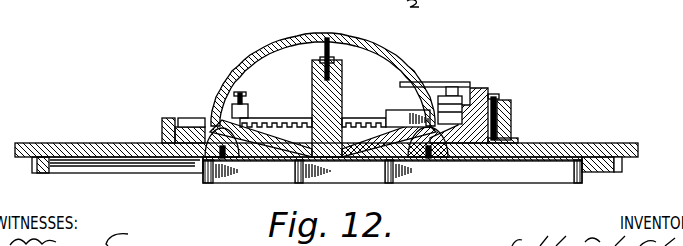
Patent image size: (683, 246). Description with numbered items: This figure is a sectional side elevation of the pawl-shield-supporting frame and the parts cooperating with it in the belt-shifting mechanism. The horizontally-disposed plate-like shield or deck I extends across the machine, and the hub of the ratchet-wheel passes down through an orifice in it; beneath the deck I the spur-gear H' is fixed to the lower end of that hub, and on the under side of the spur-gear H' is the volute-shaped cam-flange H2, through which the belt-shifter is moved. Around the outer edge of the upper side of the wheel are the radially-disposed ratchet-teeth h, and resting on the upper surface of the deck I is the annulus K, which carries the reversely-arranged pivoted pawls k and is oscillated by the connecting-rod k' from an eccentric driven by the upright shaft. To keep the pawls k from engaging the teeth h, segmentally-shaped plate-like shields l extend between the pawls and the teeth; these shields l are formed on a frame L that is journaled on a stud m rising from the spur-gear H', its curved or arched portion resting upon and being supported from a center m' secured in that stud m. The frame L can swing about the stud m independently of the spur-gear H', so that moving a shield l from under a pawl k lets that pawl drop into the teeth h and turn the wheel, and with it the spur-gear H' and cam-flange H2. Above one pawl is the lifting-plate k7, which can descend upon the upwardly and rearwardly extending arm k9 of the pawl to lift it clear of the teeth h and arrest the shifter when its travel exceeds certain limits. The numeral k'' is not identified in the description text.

The shield or deck I is at (65, 143).
The spur-gear H' is at (117, 179).
The volute-shaped cam-flange H2 is at (406, 178).
The annulus K is at (162, 121).
The ratchet-teeth h is at (188, 123).
The segmentally-shaped shields l is at (420, 108).
The frame L is at (368, 39).
The stud m is at (342, 108).
The center m' is at (315, 42).
The plate k'' is at (412, 72).
The lifting-plate k7 is at (455, 85).
The upwardly and rearwardly extending arm k9 is at (460, 93).
The pawls k is at (446, 87).
The connecting-rod k' is at (514, 118).